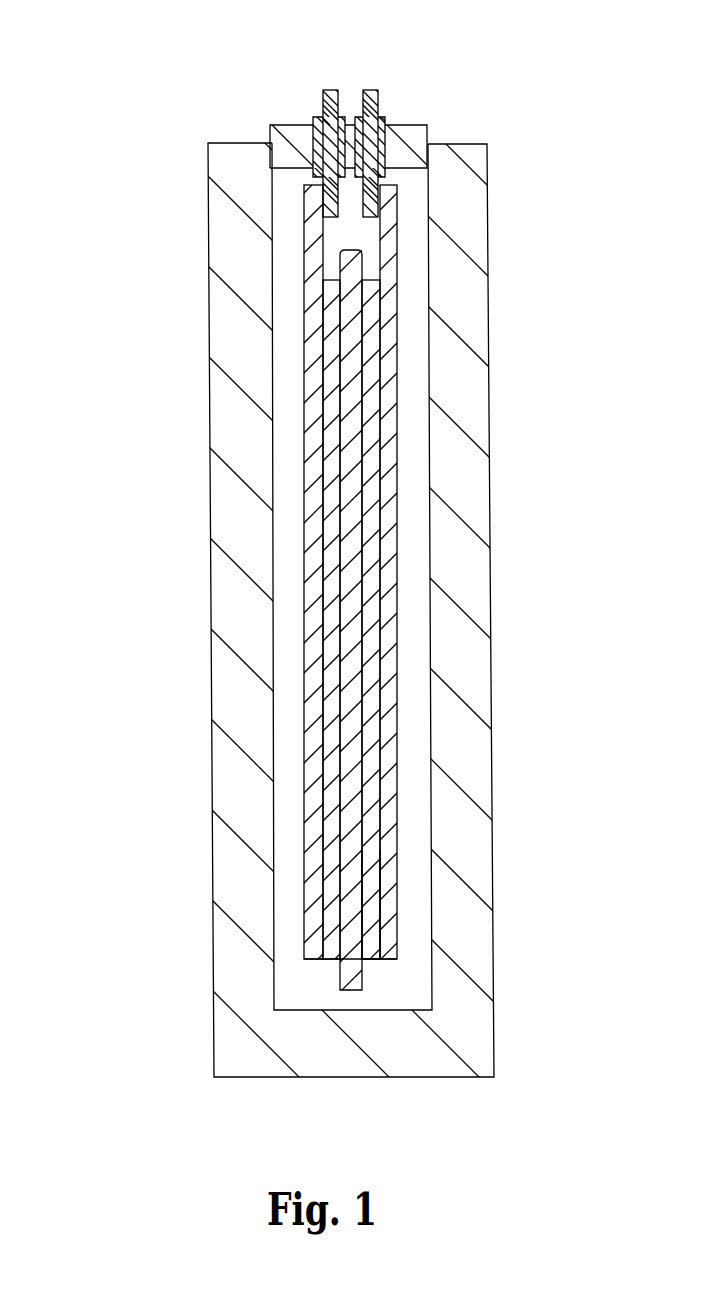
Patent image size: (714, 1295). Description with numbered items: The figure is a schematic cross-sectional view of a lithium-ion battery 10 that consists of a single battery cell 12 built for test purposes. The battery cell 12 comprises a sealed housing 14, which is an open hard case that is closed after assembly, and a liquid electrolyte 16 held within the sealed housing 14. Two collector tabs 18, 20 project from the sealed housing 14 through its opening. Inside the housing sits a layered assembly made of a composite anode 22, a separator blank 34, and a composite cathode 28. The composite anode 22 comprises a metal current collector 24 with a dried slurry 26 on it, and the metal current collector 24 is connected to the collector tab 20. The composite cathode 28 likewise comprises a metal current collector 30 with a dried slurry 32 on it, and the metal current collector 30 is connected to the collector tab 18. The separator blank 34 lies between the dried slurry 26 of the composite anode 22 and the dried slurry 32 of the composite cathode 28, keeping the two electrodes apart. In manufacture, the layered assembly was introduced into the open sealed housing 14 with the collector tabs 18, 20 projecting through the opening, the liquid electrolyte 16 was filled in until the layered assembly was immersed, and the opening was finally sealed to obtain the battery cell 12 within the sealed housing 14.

The lithium-ion battery 10 is at (166, 308).
The battery cell 12 is at (199, 498).
The sealed housing 14 is at (465, 493).
The liquid electrolyte 16 is at (420, 793).
The collector tab 18 is at (370, 90).
The collector tab 20 is at (322, 90).
The composite anode 22 is at (412, 606).
The metal current collector 24 is at (380, 687).
The dried slurry 26 is at (372, 895).
The composite cathode 28 is at (292, 648).
The metal current collector 30 is at (316, 801).
The dried slurry 32 is at (333, 708).
The separator blank 34 is at (354, 962).